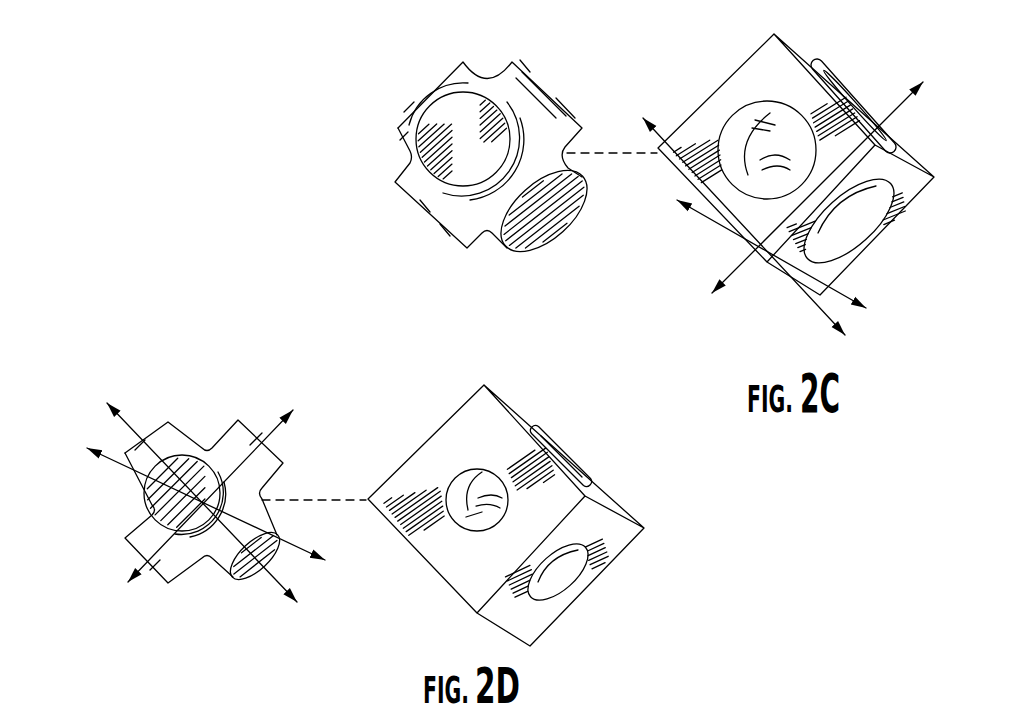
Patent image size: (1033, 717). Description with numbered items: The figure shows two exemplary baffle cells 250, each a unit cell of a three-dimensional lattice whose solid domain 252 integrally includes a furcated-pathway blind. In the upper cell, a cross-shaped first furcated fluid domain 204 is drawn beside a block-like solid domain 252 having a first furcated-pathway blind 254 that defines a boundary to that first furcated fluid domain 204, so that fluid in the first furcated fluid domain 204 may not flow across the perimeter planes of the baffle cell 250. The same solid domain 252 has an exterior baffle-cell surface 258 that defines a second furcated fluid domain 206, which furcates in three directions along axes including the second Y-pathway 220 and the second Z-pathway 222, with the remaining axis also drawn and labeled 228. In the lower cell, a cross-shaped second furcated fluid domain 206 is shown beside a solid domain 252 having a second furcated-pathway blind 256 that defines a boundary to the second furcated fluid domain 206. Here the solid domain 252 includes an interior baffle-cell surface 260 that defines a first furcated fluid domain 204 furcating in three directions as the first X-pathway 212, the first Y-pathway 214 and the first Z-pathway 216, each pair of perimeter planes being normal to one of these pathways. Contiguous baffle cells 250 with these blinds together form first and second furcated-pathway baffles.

In FIG. 2C, the baffle cell 250 is at (423, 40).
In FIG. 2C, the solid domain 252 is at (418, 98).
In FIG. 2D, the solid domain 252 is at (428, 438).
In FIG. 2C, the first furcated-pathway blind 254 is at (477, 152).
In FIG. 2C, the exterior baffle-cell surface 258 is at (533, 128).
In FIG. 2C, the second furcated fluid domain 206 is at (786, 91).
In FIG. 2C, the second Y-pathway 220 is at (837, 178).
In FIG. 2C, the second Z-pathway 222 is at (822, 308).
In FIG. 2C, the X axis 228 is at (840, 300).
In FIG. 2D, the first furcated fluid domain 204 is at (252, 511).
In FIG. 2D, the first X-pathway 212 is at (112, 463).
In FIG. 2D, the first Y-pathway 214 is at (272, 427).
In FIG. 2D, the first Z-pathway 216 is at (137, 428).
In FIG. 2D, the second furcated-pathway blind 256 is at (492, 452).
In FIG. 2D, the interior baffle-cell surface 260 is at (473, 512).